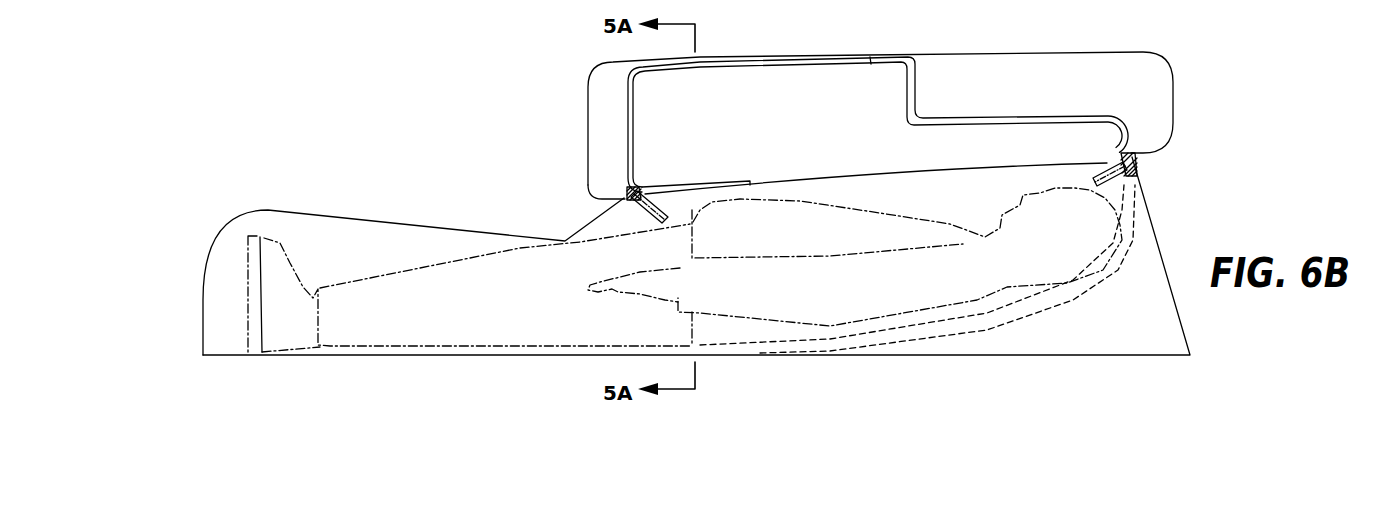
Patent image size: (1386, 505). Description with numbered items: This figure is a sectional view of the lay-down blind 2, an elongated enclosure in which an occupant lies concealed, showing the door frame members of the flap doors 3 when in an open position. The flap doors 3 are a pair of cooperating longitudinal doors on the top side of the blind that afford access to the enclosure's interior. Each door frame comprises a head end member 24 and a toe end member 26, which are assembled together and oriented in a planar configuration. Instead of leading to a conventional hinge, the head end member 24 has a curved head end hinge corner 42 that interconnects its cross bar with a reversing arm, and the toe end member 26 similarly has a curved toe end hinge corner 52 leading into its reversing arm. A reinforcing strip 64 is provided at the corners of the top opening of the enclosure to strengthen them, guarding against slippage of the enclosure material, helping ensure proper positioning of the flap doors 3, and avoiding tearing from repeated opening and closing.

The lay-down blind 2 is at (424, 222).
The flap doors 3 is at (1022, 52).
The head end member 24 is at (993, 115).
The toe end member 26 is at (810, 64).
The head end hinge corner 42 is at (1106, 148).
The toe end hinge corner 52 is at (649, 180).
The reinforcing strip 64 is at (665, 198).